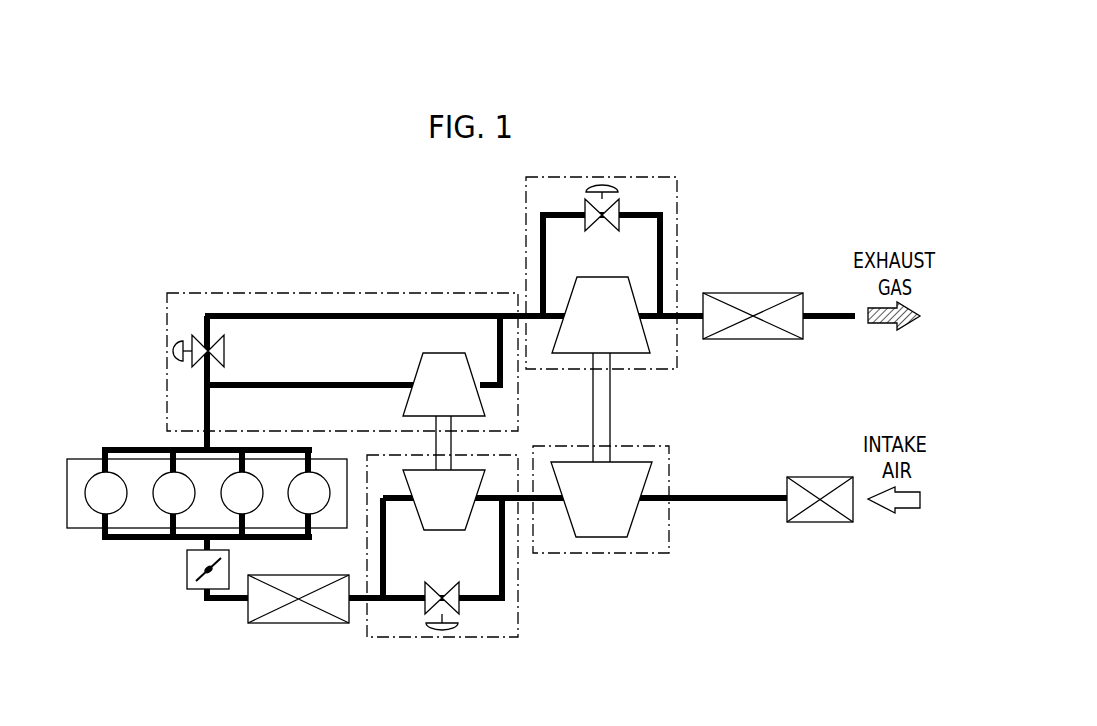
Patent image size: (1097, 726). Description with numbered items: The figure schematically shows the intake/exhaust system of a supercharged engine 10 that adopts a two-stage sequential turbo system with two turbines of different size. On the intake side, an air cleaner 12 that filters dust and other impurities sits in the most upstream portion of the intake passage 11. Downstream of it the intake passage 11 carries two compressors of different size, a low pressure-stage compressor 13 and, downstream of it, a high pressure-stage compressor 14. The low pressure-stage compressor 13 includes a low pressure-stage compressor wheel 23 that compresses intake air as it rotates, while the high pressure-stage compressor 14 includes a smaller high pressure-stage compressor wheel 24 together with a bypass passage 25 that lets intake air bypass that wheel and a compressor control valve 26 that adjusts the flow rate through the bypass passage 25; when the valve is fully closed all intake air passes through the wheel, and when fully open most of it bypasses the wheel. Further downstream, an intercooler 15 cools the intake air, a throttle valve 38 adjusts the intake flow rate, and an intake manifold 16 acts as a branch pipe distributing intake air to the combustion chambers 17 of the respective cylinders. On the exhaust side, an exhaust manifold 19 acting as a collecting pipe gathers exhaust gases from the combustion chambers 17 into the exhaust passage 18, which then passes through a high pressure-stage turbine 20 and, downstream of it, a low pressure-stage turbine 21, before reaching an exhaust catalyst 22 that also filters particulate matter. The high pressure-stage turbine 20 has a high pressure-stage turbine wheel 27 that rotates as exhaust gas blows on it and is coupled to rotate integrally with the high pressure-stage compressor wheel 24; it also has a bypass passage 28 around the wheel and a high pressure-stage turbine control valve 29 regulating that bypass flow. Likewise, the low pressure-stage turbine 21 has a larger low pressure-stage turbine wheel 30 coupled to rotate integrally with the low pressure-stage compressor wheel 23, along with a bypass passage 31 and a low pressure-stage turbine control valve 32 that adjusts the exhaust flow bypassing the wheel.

The supercharged engine 10 is at (130, 294).
The intake passage 11 is at (716, 503).
The air cleaner 12 is at (817, 482).
The low pressure-stage compressor 13 is at (610, 556).
The high pressure-stage compressor 14 is at (518, 620).
The intercooler 15 is at (298, 623).
The intake manifold 16 is at (145, 541).
The combustion chambers 17 is at (257, 475).
The exhaust passage 18 is at (823, 312).
The exhaust manifold 19 is at (132, 447).
The high pressure-stage turbine 20 is at (305, 292).
The low pressure-stage turbine 21 is at (677, 210).
The exhaust catalyst 22 is at (755, 298).
The low pressure-stage compressor wheel 23 is at (638, 476).
The high pressure-stage compressor wheel 24 is at (443, 527).
The bypass passage 25 is at (505, 573).
The compressor control valve 26 is at (422, 603).
The high pressure-stage turbine wheel 27 is at (428, 366).
The bypass passage 28 is at (383, 313).
The high pressure-stage turbine control valve 29 is at (224, 352).
The low pressure-stage turbine wheel 30 is at (645, 343).
The bypass passage 31 is at (543, 240).
The low pressure-stage turbine control valve 32 is at (585, 208).
The throttle valve 38 is at (227, 590).